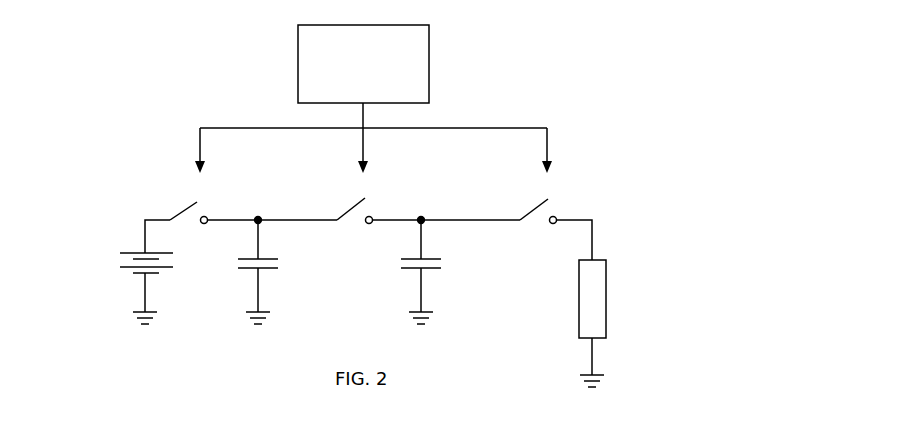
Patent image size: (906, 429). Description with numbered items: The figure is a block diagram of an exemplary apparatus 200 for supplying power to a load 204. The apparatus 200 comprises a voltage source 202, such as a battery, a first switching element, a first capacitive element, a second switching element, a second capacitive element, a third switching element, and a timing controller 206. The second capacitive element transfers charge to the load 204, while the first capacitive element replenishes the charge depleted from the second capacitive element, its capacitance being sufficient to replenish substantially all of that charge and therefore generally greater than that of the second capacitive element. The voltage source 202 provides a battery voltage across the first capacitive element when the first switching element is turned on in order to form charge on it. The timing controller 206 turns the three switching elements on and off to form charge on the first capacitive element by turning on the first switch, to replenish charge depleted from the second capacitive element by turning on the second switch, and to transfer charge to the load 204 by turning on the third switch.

The apparatus 200 is at (661, 56).
The voltage source 202 is at (133, 252).
The load 204 is at (602, 258).
The timing controller 206 is at (298, 62).